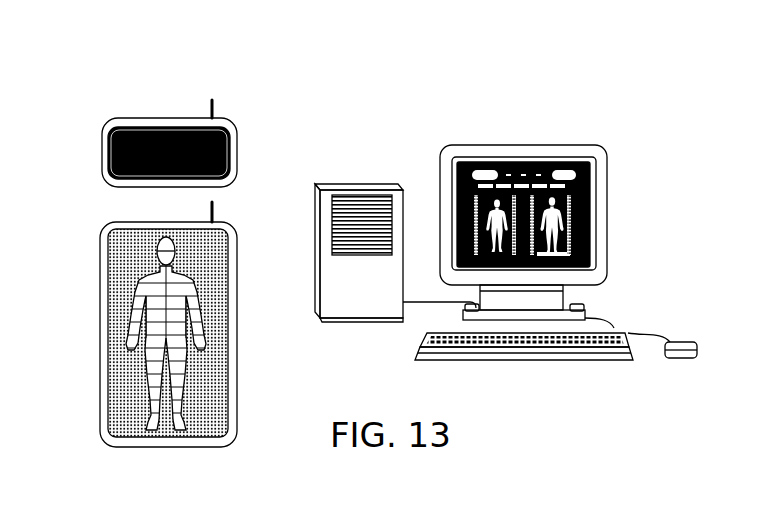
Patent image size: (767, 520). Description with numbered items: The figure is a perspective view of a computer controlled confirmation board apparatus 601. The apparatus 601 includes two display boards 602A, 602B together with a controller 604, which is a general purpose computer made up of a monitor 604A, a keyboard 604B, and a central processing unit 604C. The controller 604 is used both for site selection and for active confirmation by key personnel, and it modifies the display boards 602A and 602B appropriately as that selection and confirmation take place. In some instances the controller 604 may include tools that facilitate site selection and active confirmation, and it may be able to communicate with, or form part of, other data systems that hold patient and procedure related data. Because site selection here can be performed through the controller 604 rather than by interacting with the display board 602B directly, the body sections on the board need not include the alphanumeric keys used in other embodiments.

The apparatus 601 is at (248, 80).
The display board 602A is at (143, 120).
The display board 602B is at (108, 228).
The controller 604 is at (554, 120).
The monitor 604A is at (492, 145).
The keyboard 604B is at (621, 333).
The central processing unit 604C is at (377, 183).